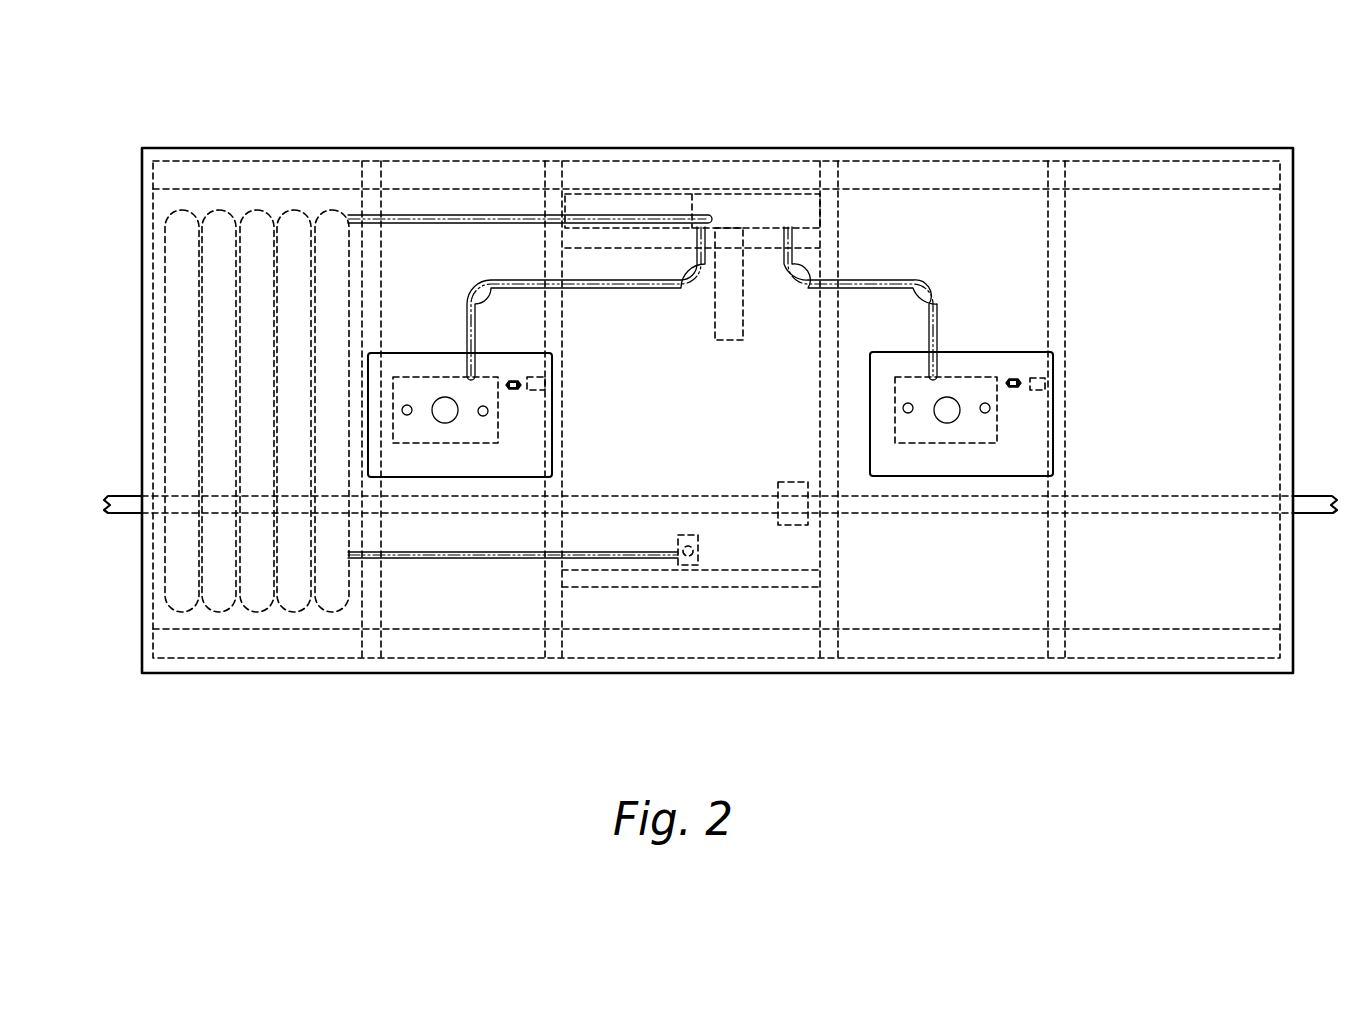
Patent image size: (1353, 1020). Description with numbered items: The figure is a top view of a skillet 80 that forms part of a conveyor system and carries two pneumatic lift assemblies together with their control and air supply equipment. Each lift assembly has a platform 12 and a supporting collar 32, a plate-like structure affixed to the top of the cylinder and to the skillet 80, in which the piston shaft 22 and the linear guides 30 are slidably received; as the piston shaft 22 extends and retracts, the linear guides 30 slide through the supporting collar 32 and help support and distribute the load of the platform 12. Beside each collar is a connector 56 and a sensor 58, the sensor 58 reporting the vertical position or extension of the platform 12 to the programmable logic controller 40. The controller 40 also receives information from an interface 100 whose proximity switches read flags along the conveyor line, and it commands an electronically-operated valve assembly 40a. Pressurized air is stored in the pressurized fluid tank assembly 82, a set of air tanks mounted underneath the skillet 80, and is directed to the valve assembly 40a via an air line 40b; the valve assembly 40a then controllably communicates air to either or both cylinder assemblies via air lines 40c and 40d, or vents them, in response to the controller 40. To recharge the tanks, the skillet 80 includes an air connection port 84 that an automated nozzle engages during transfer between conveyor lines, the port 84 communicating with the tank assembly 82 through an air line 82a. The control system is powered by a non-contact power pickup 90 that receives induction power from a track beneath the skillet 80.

The skillet 80 is at (1186, 120).
The pressurized fluid tank assembly 82 is at (253, 243).
The air line 82a is at (432, 556).
The programmable logic controller 40 is at (630, 198).
The valve assembly 40a is at (757, 205).
The air line 40b is at (428, 226).
The air line 40c is at (910, 279).
The air line 40d is at (513, 281).
The interface 100 is at (735, 303).
The platform 12 is at (485, 477).
The supporting collar 32 is at (427, 433).
The piston shaft 22 is at (445, 400).
The linear guides 30 is at (408, 404).
The connector 56 is at (521, 381).
The sensor 58 is at (545, 365).
The air connection port 84 is at (700, 553).
The non-contact power pickup 90 is at (795, 526).